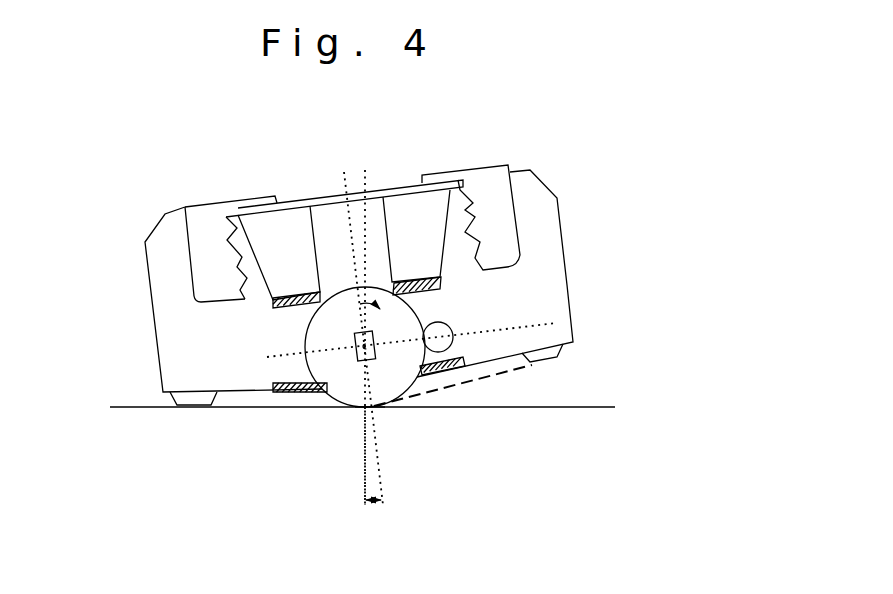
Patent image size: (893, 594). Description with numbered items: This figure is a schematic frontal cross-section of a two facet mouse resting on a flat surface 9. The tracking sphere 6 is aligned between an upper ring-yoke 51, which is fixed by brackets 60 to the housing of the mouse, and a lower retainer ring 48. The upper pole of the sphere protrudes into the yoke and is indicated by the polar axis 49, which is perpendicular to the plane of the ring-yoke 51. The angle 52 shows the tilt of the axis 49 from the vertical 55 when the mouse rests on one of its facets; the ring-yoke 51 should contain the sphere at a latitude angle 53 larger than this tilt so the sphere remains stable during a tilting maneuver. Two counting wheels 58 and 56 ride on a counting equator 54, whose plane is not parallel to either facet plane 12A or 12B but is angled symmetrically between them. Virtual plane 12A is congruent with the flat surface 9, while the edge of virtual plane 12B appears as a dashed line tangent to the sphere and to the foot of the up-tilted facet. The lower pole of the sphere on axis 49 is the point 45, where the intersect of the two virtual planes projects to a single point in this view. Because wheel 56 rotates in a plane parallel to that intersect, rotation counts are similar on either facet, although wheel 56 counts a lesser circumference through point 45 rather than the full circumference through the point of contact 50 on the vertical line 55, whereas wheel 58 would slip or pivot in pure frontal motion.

The tracking sphere 6 is at (340, 382).
The flat surface 9 is at (568, 410).
The virtual plane (first facet) 12A is at (228, 409).
The virtual plane (second facet) 12B is at (508, 381).
The lower pole point 45 is at (378, 409).
The lower retainer ring 48 is at (310, 393).
The polar axis 49 is at (343, 167).
The point of contact 50 is at (369, 418).
The upper ring-yoke 51 is at (317, 297).
The tilt angle 52 is at (378, 503).
The latitude angle 53 is at (374, 302).
The counting equator 54 is at (525, 326).
The vertical axis line 55 is at (364, 477).
The counting wheel 56 is at (355, 334).
The counting wheel 58 is at (450, 325).
The brackets 60 is at (272, 233).